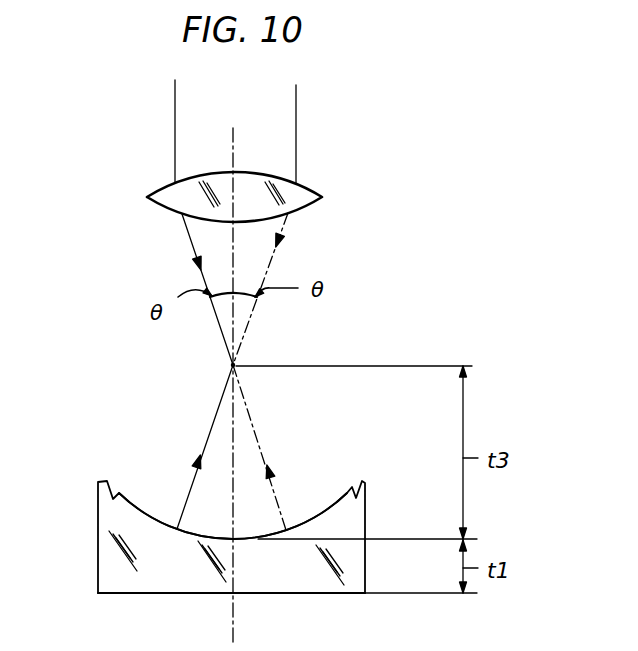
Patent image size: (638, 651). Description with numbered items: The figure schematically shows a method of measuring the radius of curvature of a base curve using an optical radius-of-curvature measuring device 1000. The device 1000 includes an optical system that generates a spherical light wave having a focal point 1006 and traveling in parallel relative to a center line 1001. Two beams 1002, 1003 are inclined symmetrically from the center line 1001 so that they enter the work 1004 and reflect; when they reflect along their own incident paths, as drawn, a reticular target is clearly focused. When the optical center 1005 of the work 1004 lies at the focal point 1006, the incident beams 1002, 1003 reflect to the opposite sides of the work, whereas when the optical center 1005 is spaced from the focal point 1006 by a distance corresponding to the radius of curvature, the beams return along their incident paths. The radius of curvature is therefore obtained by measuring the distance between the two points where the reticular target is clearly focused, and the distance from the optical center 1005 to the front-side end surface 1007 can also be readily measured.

The optical radius-of-curvature measuring device 1000 is at (364, 163).
The center line 1001 is at (233, 137).
The incident beam 1002 is at (189, 238).
The incident beam 1003 is at (281, 235).
The work 1004 is at (98, 555).
The optical center 1005 is at (233, 539).
The focal point 1006 is at (230, 365).
The front-side end surface 1007 is at (305, 594).